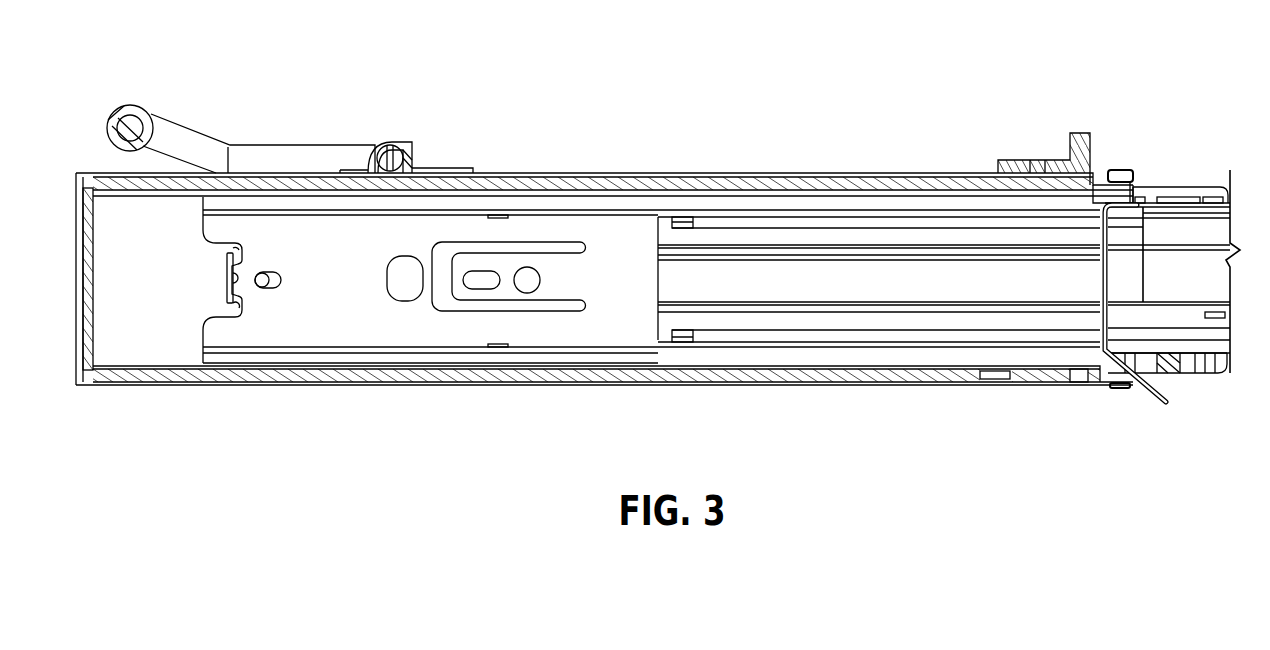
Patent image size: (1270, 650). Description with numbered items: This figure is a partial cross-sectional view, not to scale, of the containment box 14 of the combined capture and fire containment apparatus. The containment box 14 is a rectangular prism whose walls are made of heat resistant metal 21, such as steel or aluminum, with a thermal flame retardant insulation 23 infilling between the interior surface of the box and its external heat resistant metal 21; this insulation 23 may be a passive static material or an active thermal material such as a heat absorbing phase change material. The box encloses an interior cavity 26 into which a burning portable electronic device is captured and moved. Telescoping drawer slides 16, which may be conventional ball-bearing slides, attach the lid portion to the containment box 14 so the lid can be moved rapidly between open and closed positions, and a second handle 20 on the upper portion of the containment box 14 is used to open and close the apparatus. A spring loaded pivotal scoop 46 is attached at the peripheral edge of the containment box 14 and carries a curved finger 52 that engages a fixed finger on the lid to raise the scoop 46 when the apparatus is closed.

The containment box 14 is at (470, 404).
The telescoping drawer slides 16 is at (257, 338).
The second handle 20 is at (143, 118).
The heat resistant metal 21 is at (557, 175).
The thermal flame retardant insulation 23 is at (347, 366).
The interior cavity 26 is at (135, 290).
The spring loaded pivotal scoop 46 is at (1147, 396).
The curved finger 52 is at (1181, 373).